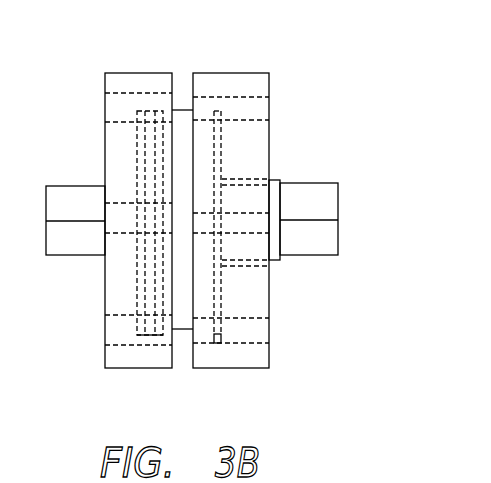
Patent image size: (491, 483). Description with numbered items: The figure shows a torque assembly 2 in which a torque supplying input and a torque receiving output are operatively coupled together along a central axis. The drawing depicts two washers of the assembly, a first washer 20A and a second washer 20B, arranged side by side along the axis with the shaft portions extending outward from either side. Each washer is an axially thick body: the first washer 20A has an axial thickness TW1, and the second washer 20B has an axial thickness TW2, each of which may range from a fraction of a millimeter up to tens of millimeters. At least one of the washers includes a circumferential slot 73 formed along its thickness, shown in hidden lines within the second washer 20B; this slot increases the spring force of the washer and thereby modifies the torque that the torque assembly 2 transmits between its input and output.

The torque assembly 2 is at (207, 220).
The first washer 20A is at (215, 112).
The second washer 20B is at (150, 111).
The circumferential slot 73 is at (140, 112).
The axial thickness of the first washer TW1 is at (140, 336).
The axial thickness of the second washer TW2 is at (217, 343).